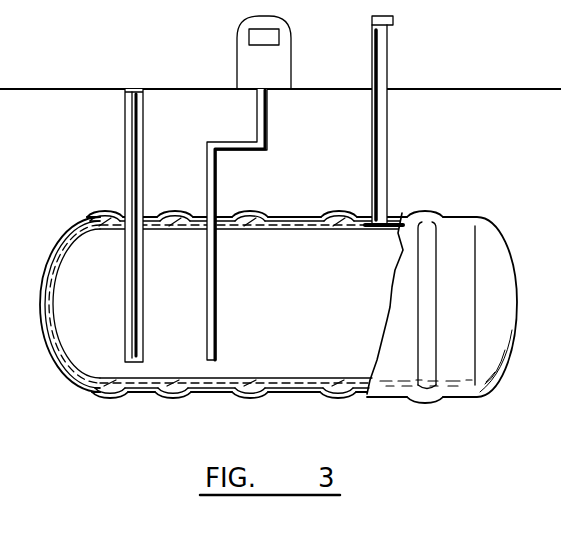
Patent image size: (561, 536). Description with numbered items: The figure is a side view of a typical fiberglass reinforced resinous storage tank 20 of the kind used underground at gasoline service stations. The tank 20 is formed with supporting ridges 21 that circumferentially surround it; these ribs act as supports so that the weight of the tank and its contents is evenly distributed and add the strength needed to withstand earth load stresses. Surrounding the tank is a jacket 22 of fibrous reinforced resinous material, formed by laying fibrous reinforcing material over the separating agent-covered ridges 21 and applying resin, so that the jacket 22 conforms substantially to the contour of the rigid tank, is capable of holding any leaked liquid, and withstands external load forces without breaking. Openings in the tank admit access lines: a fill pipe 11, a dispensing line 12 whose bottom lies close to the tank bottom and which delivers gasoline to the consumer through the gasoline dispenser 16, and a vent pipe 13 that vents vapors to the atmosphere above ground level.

The fill pipe 11 is at (125, 131).
The dispensing line 12 is at (258, 124).
The vent pipe 13 is at (387, 140).
The gasoline dispenser 16 is at (247, 57).
The fiberglass reinforced resinous storage tank 20 is at (284, 232).
The supporting ridges 21 is at (247, 235).
The jacket 22 is at (156, 216).